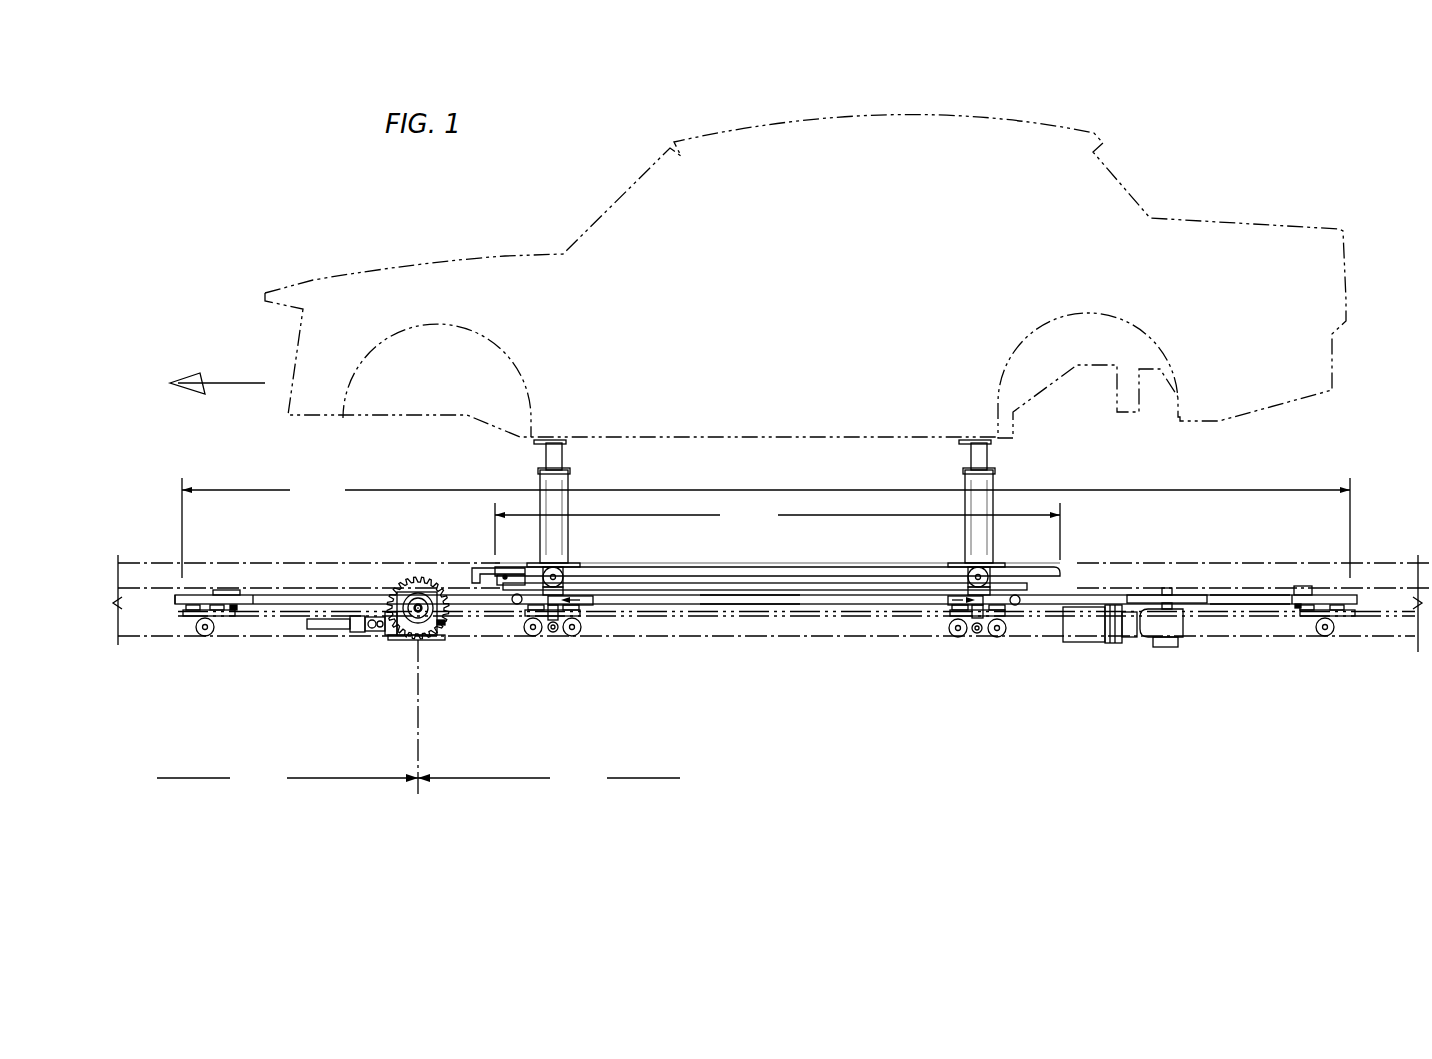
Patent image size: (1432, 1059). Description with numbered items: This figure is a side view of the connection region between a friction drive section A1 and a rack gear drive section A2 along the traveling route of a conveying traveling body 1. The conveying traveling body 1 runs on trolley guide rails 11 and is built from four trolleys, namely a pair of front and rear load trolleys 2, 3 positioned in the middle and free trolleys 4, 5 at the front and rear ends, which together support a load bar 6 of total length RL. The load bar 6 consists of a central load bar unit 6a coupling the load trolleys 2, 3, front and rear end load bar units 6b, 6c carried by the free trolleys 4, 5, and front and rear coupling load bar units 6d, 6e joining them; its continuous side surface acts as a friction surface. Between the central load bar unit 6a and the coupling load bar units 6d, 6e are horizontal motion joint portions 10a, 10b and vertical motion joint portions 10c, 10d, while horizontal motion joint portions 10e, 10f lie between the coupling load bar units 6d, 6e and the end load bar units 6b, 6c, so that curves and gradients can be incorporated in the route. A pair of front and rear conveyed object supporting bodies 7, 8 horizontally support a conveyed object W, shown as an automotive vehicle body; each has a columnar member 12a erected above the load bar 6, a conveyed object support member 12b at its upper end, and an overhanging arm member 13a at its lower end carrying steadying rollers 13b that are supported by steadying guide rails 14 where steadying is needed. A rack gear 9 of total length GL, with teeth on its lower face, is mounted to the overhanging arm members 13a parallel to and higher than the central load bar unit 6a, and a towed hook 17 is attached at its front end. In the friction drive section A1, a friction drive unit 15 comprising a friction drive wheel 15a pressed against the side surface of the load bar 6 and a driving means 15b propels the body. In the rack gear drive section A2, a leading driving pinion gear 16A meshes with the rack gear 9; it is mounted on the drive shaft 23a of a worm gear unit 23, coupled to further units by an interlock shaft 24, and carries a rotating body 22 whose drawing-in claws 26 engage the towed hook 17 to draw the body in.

The conveying traveling body 1 is at (846, 548).
The load trolley 2 is at (570, 640).
The load trolley 3 is at (976, 648).
The free trolley 4 is at (195, 645).
The free trolley 5 is at (1332, 648).
The load bar 6 is at (695, 582).
The central load bar unit 6a is at (748, 602).
The front end load bar unit 6b is at (200, 596).
The rear end load bar unit 6c is at (1330, 596).
The front coupling load bar unit 6d is at (290, 596).
The rear coupling load bar unit 6e is at (1243, 598).
The conveyed object supporting body 7 is at (578, 502).
The conveyed object supporting body 8 is at (956, 506).
The rack gear 9 is at (770, 573).
The horizontal motion joint portion 10a is at (572, 600).
The horizontal motion joint portion 10b is at (954, 600).
The vertical motion joint portion 10c is at (514, 622).
The vertical motion joint portion 10d is at (1016, 620).
The horizontal motion joint portion 10e is at (236, 622).
The horizontal motion joint portion 10f is at (1296, 622).
The trolley guide rail 11 is at (150, 628).
The columnar member 12a is at (548, 506).
The conveyed object support member 12b is at (562, 452).
The overhanging arm member 13a is at (567, 577).
The steadying roller 13b is at (553, 566).
The steadying guide rail 14 is at (1385, 572).
The friction drive unit 15 is at (1143, 580).
The friction drive wheel 15a is at (1187, 598).
The driving means 15b is at (1093, 633).
The leading driving pinion gear 16A is at (395, 594).
The towed hook 17 is at (470, 577).
The rotating body 22 is at (443, 613).
The worm gear unit 23 is at (407, 632).
The drive shaft 23a is at (418, 610).
The interlock shaft 24 is at (322, 625).
The drawing-in claw 26 is at (426, 568).
The conveyed object W is at (653, 214).
The total length of load bar RL is at (766, 528).
The total length of rack gear GL is at (777, 531).
The friction drive section A1 is at (549, 779).
The rack gear drive section A2 is at (287, 779).